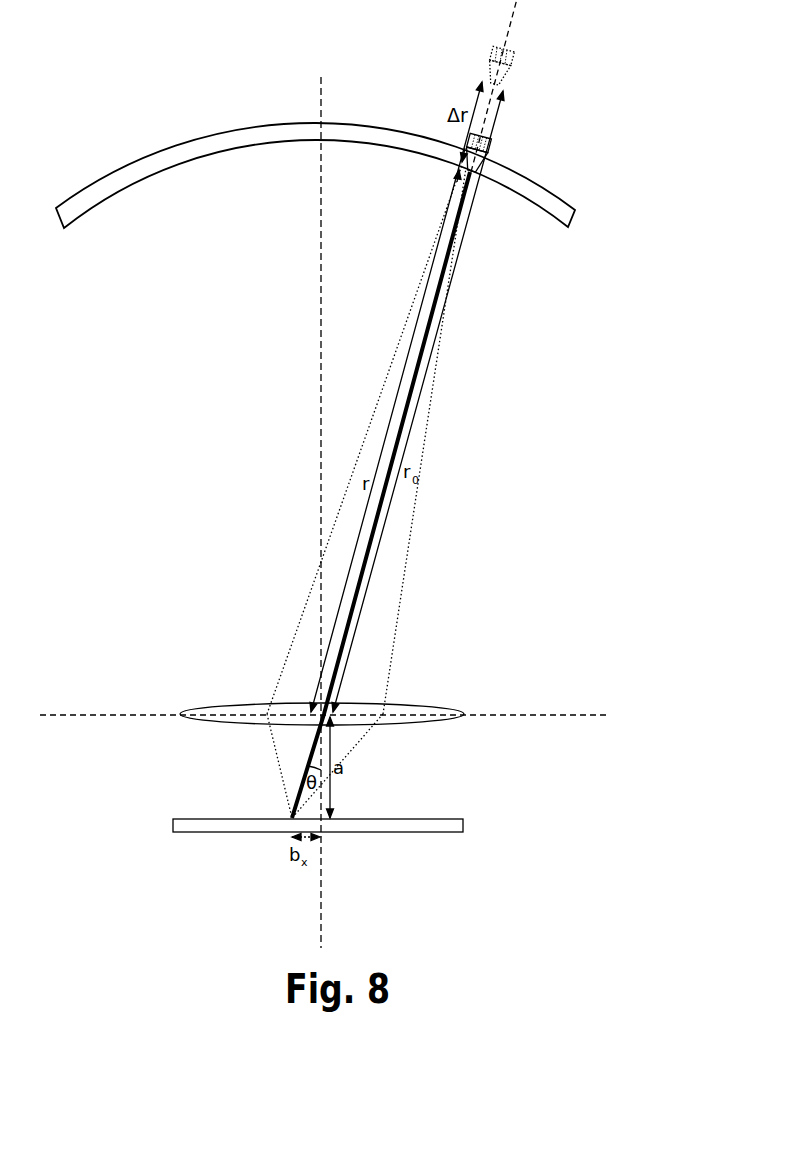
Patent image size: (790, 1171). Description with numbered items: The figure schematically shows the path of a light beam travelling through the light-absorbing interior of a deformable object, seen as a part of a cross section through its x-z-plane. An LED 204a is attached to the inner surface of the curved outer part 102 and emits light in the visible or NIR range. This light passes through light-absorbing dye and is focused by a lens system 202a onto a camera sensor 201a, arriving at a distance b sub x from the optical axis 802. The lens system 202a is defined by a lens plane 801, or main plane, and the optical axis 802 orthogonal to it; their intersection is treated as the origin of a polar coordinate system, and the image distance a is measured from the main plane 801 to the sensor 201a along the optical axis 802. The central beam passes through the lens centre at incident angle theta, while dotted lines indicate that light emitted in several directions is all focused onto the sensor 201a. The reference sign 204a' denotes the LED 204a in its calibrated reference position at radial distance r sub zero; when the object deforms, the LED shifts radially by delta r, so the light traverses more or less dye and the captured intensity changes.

The outer part 102 is at (571, 209).
The LED 204a is at (544, 152).
The LED in reference position 204a' is at (569, 65).
The optical axis 802 is at (321, 432).
The lens plane 801 is at (565, 716).
The lens system 202a is at (463, 716).
The camera sensor 201a is at (463, 828).